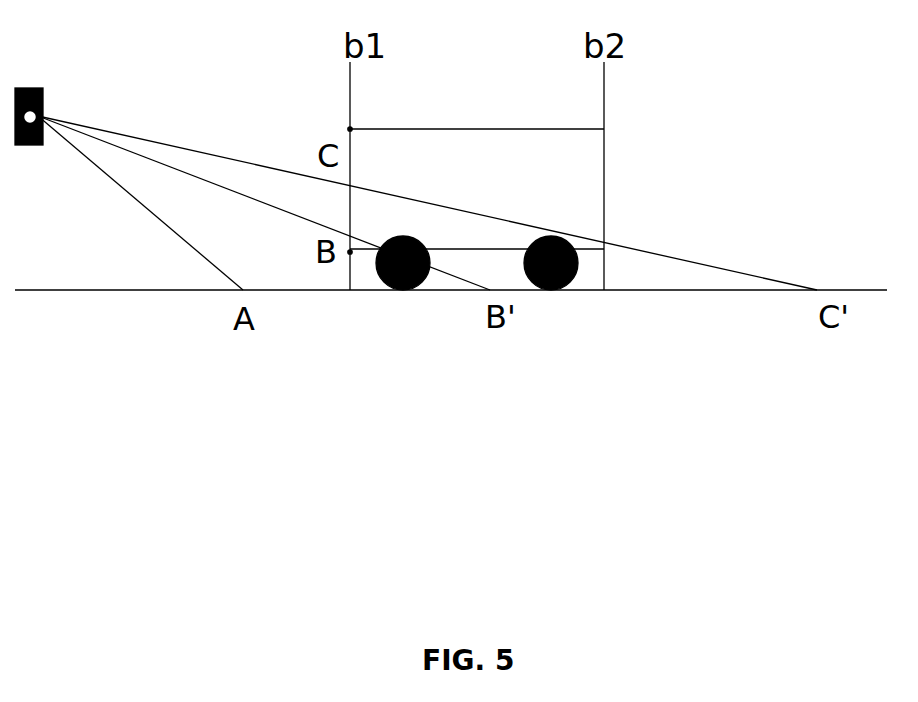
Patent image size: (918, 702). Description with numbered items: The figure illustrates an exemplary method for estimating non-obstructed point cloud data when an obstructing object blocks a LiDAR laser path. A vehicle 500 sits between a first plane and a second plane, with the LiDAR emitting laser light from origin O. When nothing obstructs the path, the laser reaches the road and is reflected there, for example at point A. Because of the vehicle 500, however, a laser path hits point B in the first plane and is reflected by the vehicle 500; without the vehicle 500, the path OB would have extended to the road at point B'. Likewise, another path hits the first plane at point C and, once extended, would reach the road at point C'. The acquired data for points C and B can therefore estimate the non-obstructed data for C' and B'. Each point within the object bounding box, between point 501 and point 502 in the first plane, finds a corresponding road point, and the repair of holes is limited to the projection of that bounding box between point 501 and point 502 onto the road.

The vehicle 500 is at (427, 203).
The point 501 is at (348, 127).
The point 502 is at (349, 254).